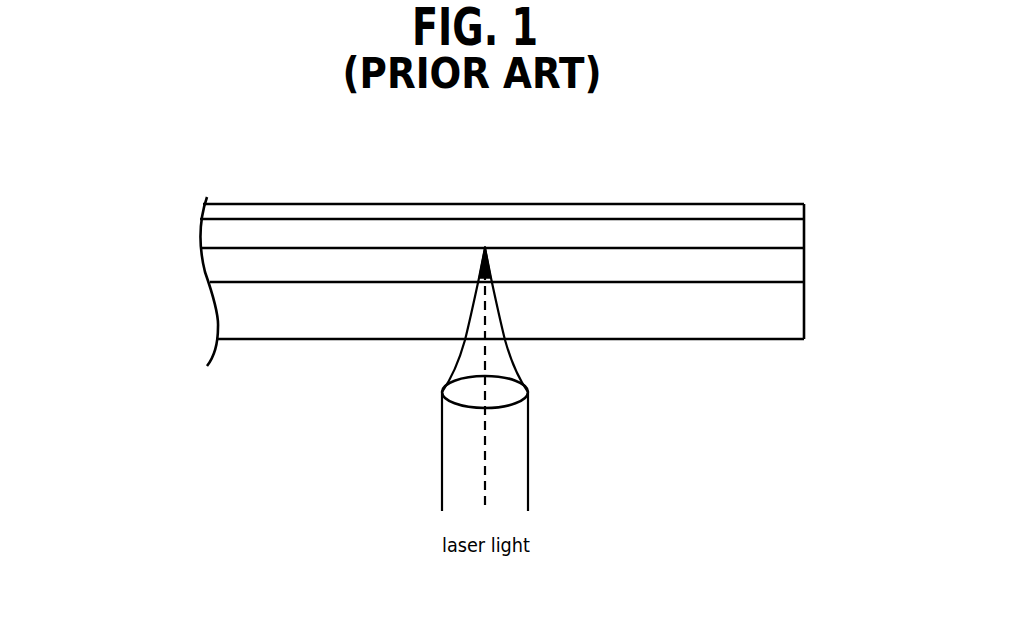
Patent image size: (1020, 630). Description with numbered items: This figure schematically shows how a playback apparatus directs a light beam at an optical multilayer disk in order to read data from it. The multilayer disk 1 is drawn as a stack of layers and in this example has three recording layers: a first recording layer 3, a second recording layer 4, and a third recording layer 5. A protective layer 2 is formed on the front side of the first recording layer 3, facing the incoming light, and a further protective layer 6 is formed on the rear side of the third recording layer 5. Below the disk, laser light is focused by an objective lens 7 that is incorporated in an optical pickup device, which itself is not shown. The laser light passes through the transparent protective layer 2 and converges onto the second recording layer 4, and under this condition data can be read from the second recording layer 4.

The multilayer disk 1 is at (533, 246).
The protective layer 2 is at (697, 328).
The first recording layer 3 is at (785, 281).
The second recording layer 4 is at (786, 248).
The third recording layer 5 is at (790, 219).
The protective layer 6 is at (782, 204).
The objective lens 7 is at (513, 391).